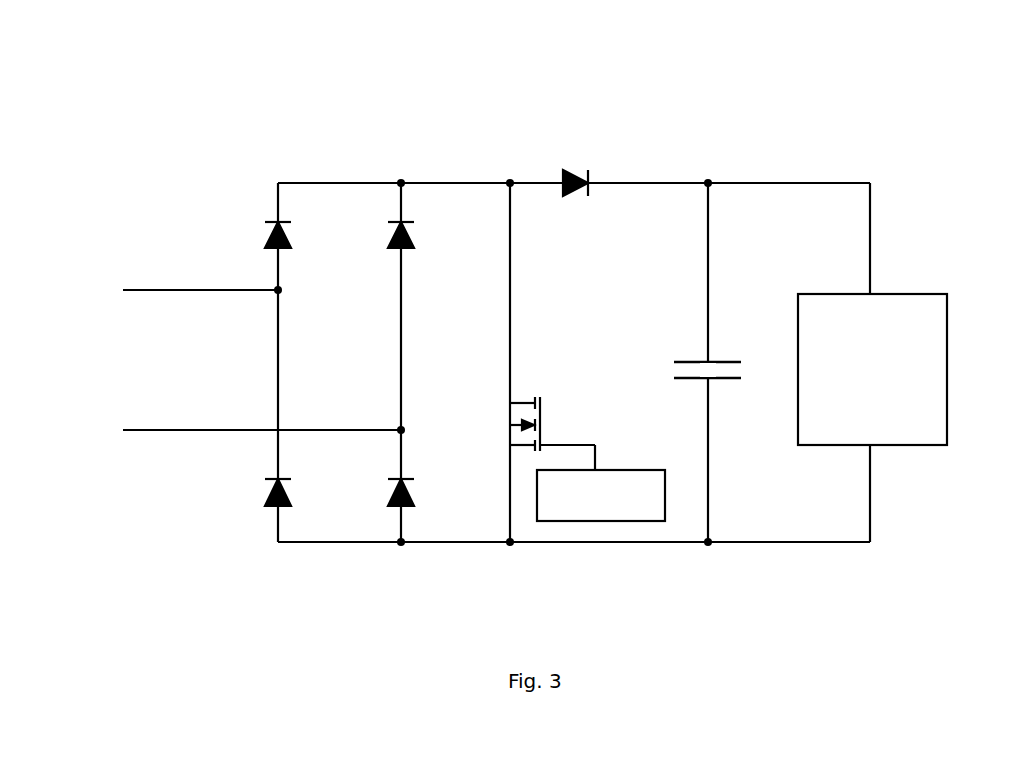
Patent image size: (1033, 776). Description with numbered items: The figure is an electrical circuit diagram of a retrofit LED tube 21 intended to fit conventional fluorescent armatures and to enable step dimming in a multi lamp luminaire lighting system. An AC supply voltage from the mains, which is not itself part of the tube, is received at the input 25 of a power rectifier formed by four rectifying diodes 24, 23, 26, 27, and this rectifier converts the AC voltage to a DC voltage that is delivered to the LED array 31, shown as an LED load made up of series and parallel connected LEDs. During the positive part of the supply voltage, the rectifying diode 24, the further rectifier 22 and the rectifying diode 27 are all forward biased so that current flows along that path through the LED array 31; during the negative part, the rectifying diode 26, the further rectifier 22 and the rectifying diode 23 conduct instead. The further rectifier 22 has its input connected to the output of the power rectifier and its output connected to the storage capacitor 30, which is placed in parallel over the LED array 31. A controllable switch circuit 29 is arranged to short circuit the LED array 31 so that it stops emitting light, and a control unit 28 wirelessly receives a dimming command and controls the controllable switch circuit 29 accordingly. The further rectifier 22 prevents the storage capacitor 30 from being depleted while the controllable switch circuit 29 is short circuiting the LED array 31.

The retrofit LED tube 21 is at (814, 81).
The further rectifier 22 is at (574, 171).
The rectifying diode 23 is at (392, 213).
The rectifying diode 24 is at (264, 203).
The input 25 is at (82, 313).
The rectifying diode 26 is at (266, 511).
The rectifying diode 27 is at (381, 519).
The control unit 28 is at (628, 524).
The controllable switch circuit 29 is at (543, 397).
The storage capacitor 30 is at (726, 383).
The LED array 31 is at (913, 438).